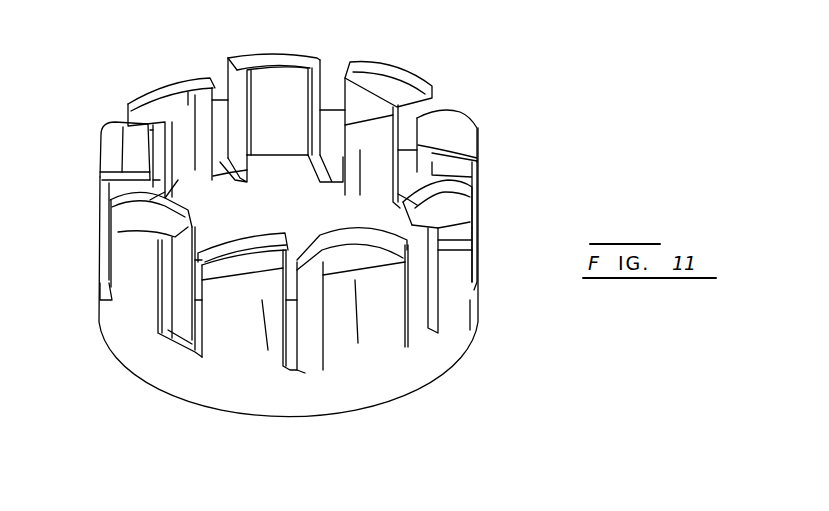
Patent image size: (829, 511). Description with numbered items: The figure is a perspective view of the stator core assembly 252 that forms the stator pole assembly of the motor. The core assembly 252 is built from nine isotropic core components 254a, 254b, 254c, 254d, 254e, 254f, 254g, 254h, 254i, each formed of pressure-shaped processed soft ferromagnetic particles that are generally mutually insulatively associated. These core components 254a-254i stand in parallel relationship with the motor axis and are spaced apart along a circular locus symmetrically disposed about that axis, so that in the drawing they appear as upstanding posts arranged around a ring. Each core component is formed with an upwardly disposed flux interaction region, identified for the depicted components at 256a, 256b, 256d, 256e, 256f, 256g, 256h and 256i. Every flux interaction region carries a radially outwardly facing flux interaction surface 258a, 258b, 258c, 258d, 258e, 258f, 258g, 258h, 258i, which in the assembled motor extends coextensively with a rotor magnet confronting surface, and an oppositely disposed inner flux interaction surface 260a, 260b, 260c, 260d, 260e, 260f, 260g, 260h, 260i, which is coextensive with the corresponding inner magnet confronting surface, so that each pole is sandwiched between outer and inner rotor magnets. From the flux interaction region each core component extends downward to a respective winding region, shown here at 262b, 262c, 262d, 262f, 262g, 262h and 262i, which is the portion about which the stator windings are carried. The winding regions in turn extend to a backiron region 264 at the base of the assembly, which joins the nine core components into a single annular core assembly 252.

The stator core assembly 252 is at (605, 73).
The backiron region 264 is at (447, 360).
The core component 254a is at (479, 134).
The core component 254b is at (413, 72).
The core component 254c is at (273, 50).
The core component 254d is at (143, 82).
The core component 254e is at (90, 153).
The core component 254f is at (137, 257).
The core component 254g is at (227, 317).
The core component 254h is at (382, 331).
The core component 254i is at (460, 283).
The flux interaction region 256a is at (421, 165).
The flux interaction region 256b is at (355, 102).
The flux interaction region 256d is at (203, 120).
The flux interaction region 256e is at (153, 165).
The flux interaction region 256f is at (151, 277).
The flux interaction region 256g is at (220, 300).
The flux interaction region 256h is at (347, 302).
The flux interaction region 256i is at (453, 243).
The outer flux interaction surface 258a is at (458, 118).
The outer flux interaction surface 258b is at (385, 68).
The outer flux interaction surface 258c is at (295, 57).
The outer flux interaction surface 258d is at (132, 100).
The outer flux interaction surface 258e is at (100, 168).
The outer flux interaction surface 258f is at (115, 215).
The outer flux interaction surface 258g is at (250, 300).
The outer flux interaction surface 258h is at (387, 357).
The outer flux interaction surface 258i is at (468, 250).
The inner flux interaction surface 260a is at (477, 166).
The inner flux interaction surface 260b is at (363, 117).
The inner flux interaction surface 260c is at (272, 85).
The inner flux interaction surface 260d is at (195, 143).
The inner flux interaction surface 260e is at (175, 150).
The inner flux interaction surface 260f is at (178, 179).
The inner flux interaction surface 260g is at (248, 230).
The inner flux interaction surface 260h is at (346, 231).
The inner flux interaction surface 260i is at (463, 218).
The winding region 262b is at (367, 158).
The winding region 262c is at (285, 127).
The winding region 262d is at (193, 103).
The winding region 262f is at (100, 295).
The winding region 262g is at (262, 352).
The winding region 262h is at (360, 350).
The winding region 262i is at (470, 333).